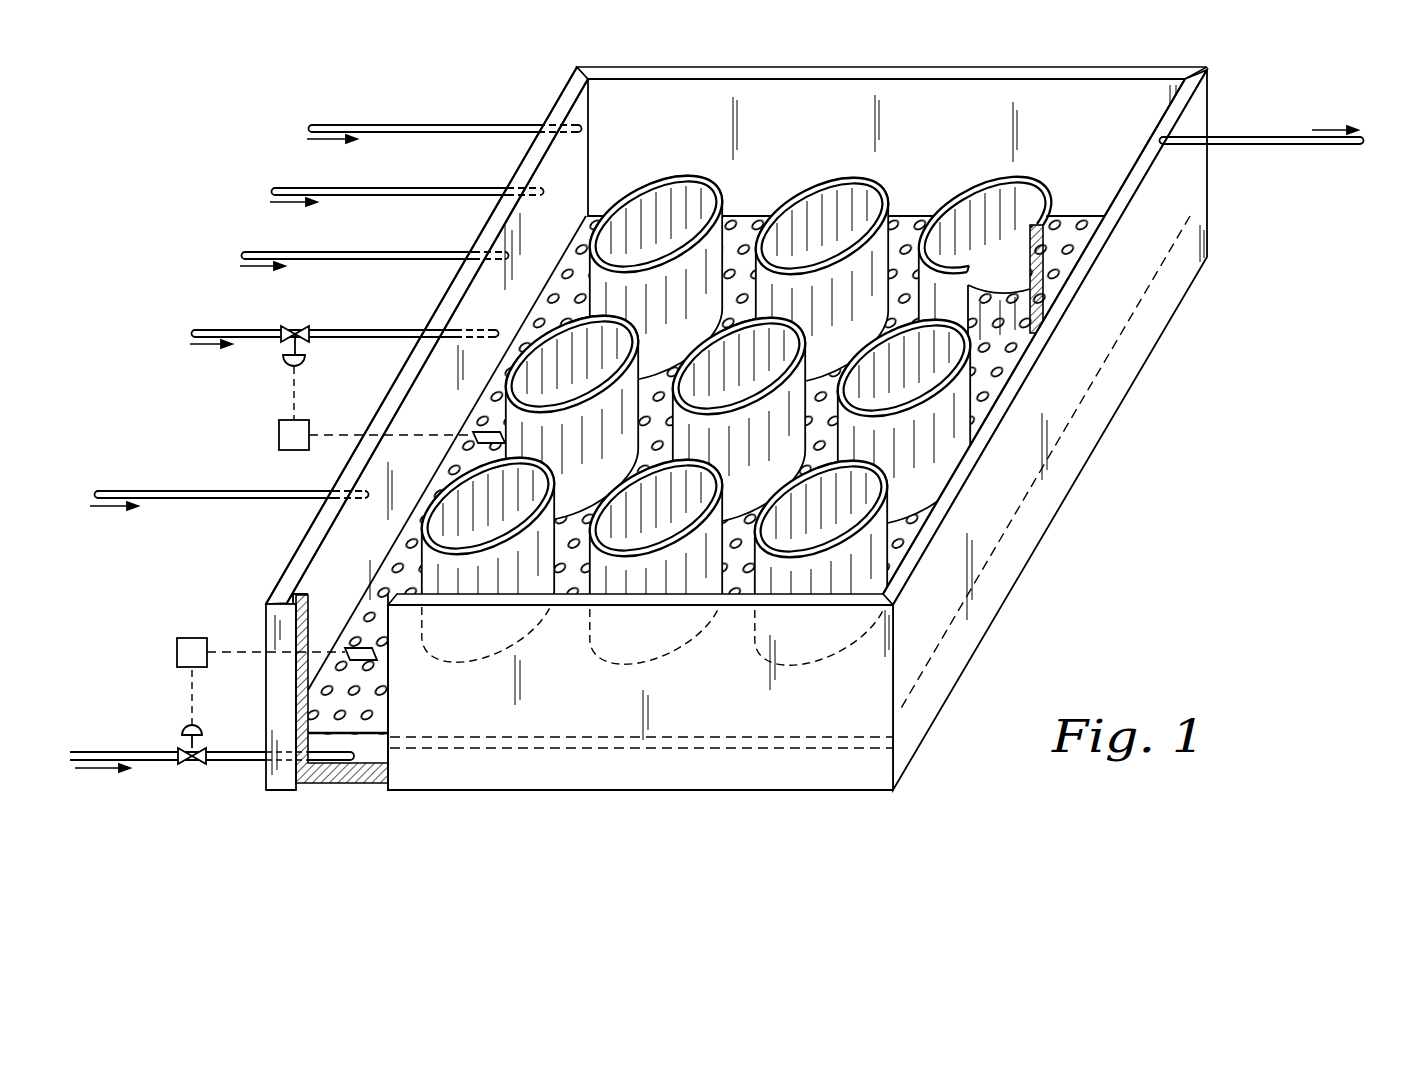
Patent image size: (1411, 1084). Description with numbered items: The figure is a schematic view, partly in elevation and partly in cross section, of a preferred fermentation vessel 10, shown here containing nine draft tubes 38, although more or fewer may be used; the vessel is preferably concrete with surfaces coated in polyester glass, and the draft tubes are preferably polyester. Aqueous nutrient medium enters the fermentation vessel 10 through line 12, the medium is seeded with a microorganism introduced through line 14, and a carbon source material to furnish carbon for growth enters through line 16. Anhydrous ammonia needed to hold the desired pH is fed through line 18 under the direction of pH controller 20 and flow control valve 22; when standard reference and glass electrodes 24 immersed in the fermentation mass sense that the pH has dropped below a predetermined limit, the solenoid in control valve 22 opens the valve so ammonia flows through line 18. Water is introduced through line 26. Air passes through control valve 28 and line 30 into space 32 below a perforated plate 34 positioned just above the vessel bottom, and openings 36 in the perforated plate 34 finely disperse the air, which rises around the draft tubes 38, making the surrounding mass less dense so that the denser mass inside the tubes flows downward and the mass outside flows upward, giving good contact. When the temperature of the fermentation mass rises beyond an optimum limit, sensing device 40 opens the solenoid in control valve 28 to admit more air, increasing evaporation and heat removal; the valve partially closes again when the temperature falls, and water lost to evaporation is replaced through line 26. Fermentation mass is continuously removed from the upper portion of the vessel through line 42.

The fermentation vessel 10 is at (736, 440).
The line 12 is at (413, 197).
The line 14 is at (442, 133).
The line 16 is at (375, 261).
The line 18 is at (377, 340).
The pH controller 20 is at (309, 421).
The flow control valve 22 is at (285, 363).
The standard reference and glass electrodes 24 is at (478, 436).
The line 26 is at (227, 502).
The control valve 28 is at (200, 729).
The line 30 is at (247, 763).
The space 32 is at (375, 758).
The perforated plate 34 is at (367, 742).
The openings 36 is at (372, 712).
The draft tubes 38 is at (938, 200).
The sensing device 40 is at (368, 648).
The line 42 is at (1257, 136).